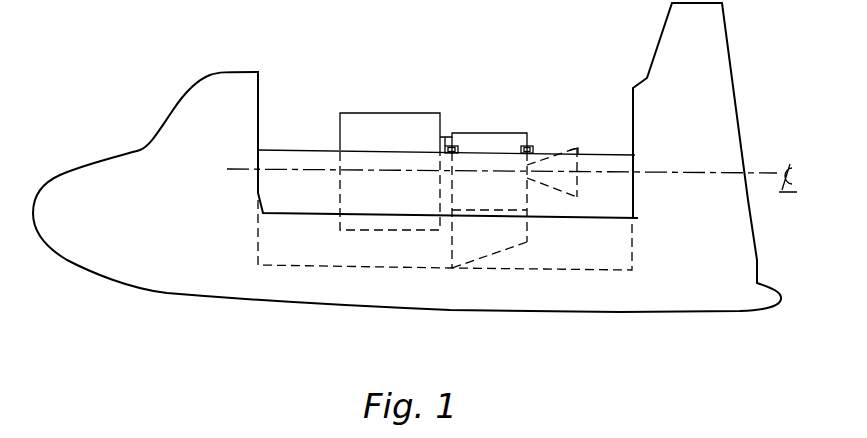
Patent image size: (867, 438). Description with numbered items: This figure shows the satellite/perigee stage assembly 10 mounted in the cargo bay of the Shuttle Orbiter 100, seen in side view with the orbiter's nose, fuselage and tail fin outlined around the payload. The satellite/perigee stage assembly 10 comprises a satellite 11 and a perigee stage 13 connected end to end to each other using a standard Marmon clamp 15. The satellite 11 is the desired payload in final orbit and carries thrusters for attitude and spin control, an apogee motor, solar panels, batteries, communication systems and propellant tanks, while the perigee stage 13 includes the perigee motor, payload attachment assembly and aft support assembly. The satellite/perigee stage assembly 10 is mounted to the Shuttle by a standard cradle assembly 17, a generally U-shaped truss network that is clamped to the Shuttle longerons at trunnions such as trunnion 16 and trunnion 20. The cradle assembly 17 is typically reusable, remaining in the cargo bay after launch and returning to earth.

The Shuttle Orbiter 100 is at (170, 291).
The satellite/perigee stage assembly 10 is at (423, 104).
The satellite 11 is at (388, 116).
The perigee stage 13 is at (483, 133).
The Marmon clamp 15 is at (447, 146).
The trunnion 16 is at (453, 150).
The trunnion 20 is at (529, 146).
The cradle assembly 17 is at (492, 253).